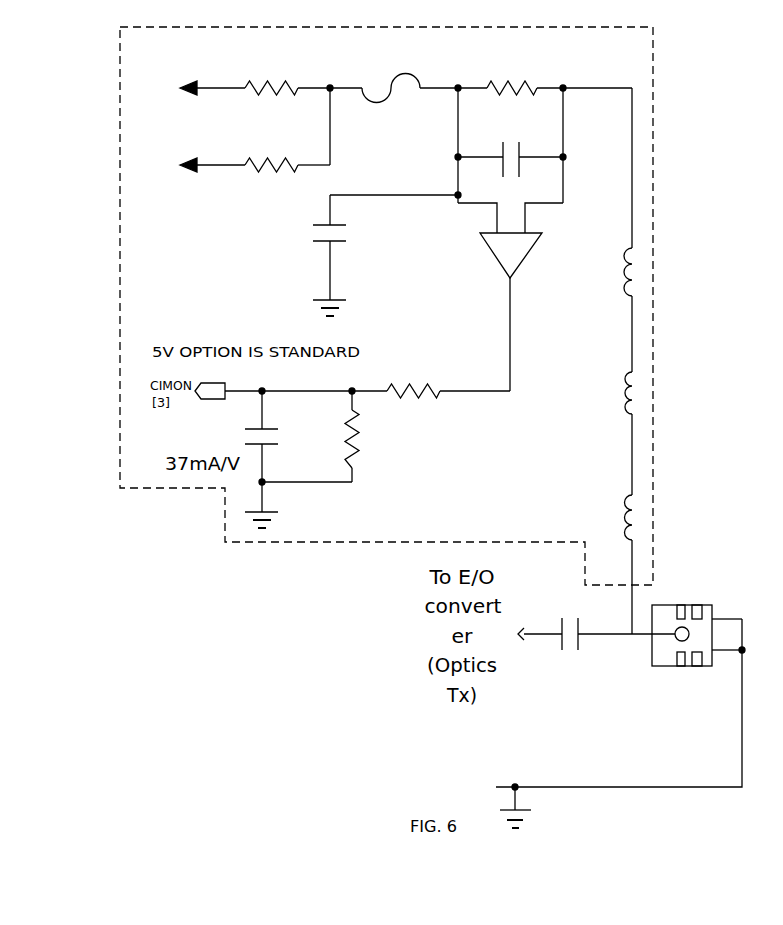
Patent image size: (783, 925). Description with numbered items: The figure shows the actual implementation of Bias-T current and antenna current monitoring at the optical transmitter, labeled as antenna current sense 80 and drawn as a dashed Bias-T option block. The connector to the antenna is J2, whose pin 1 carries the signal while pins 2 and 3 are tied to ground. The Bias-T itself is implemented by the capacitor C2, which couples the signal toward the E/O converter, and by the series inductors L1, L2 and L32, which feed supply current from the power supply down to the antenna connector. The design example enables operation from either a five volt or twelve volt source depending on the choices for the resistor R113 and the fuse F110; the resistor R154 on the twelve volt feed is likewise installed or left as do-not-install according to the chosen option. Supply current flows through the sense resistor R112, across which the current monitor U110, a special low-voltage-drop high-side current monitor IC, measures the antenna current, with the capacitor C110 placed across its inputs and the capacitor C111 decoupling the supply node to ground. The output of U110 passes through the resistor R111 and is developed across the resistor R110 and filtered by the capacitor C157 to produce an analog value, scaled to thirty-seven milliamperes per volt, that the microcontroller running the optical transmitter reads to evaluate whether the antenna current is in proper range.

The antenna current sense 80 is at (120, 86).
The resistor R113 is at (252, 113).
The resistor R154 is at (236, 170).
The fuse F110 is at (417, 86).
The resistor R112 is at (543, 132).
The capacitor C110 is at (510, 156).
The high-side current monitor IC U110 is at (446, 291).
The capacitor C111 is at (313, 255).
The inductor L32 is at (596, 272).
The inductor L2 is at (591, 393).
The inductor L1 is at (595, 517).
The capacitor C157 is at (245, 459).
The resistor R110 is at (310, 436).
The resistor R111 is at (446, 398).
The capacitor C2 is at (553, 635).
The antenna connector J2 is at (682, 627).
The connector pin 1 is at (626, 626).
The connector pin 2 is at (727, 611).
The connector pin 3 is at (728, 644).